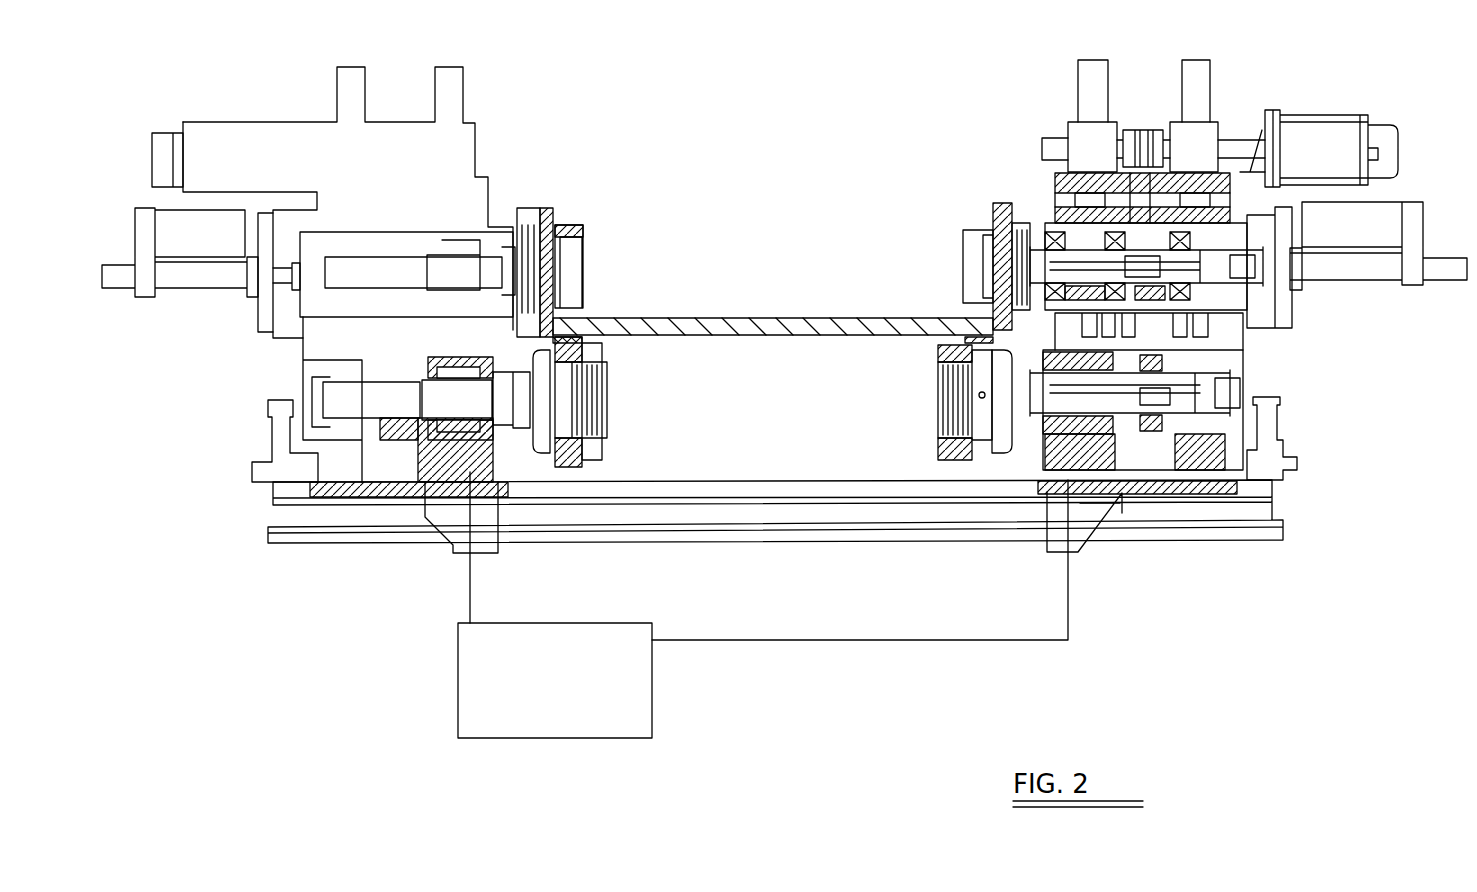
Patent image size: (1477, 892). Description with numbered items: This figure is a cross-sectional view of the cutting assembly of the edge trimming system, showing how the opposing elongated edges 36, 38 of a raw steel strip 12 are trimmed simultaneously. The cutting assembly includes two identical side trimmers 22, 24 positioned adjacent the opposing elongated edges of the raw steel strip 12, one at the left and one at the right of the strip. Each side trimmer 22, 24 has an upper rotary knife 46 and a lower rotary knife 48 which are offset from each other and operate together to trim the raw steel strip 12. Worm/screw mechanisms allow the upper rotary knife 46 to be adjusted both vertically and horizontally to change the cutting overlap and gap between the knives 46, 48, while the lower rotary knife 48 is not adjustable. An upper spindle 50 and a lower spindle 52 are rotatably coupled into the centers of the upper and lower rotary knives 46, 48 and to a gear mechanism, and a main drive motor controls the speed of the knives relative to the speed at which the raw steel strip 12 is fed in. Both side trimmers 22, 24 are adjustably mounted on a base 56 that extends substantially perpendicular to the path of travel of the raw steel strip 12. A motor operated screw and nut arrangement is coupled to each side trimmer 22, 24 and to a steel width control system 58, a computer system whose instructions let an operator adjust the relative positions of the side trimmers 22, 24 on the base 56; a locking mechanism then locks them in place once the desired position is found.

The raw steel strip 12 is at (818, 335).
The side trimmer 22 is at (463, 162).
The side trimmer 24 is at (1083, 157).
The elongated edge 36 is at (580, 327).
The elongated edge 38 is at (993, 317).
The upper rotary knife 46 is at (547, 267).
The lower rotary knife 48 is at (563, 417).
The upper spindle 50 is at (472, 287).
The lower spindle 52 is at (472, 413).
The base 56 is at (836, 515).
The steel width control system 58 is at (638, 687).